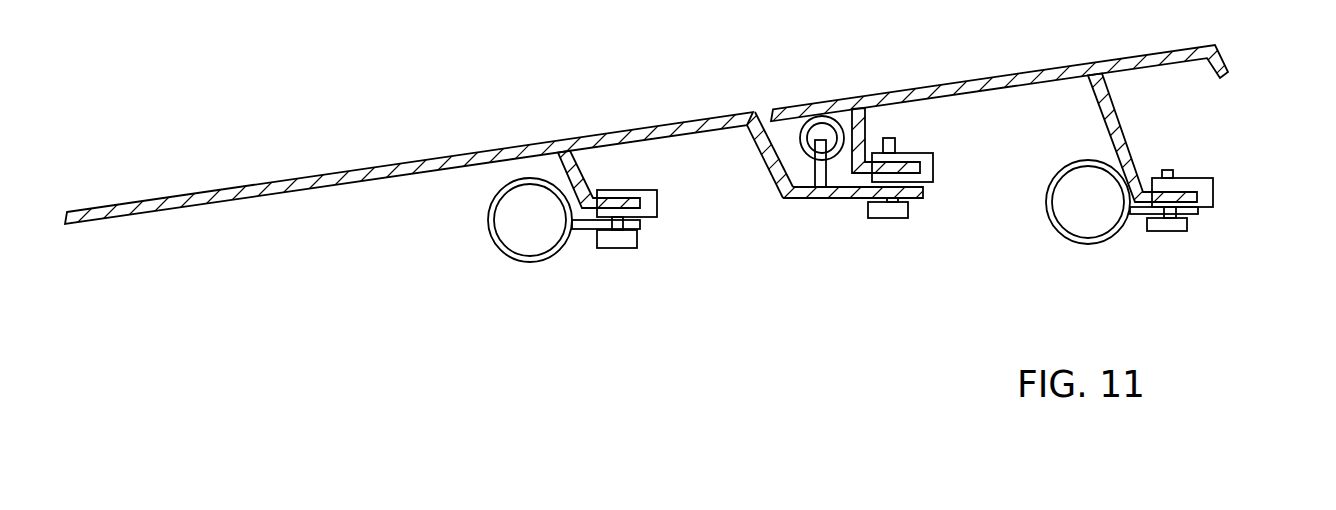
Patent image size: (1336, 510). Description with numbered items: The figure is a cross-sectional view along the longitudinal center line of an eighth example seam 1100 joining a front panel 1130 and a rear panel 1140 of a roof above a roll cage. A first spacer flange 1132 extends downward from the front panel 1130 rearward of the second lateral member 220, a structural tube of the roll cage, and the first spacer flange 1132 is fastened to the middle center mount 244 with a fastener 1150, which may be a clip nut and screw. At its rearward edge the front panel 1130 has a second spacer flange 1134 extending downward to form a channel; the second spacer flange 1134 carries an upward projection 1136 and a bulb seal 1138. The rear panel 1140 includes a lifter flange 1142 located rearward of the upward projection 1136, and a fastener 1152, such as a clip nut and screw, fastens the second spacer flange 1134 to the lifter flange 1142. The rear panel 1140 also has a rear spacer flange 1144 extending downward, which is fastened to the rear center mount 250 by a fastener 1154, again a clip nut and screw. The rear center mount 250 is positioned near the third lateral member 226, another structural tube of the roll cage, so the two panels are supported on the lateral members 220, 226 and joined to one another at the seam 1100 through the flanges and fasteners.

The seam 1100 is at (646, 133).
The front panel 1130 is at (409, 152).
The first spacer flange 1132 is at (491, 153).
The second spacer flange 1134 is at (720, 189).
The upward projection 1136 is at (821, 245).
The bulb seal 1138 is at (778, 113).
The rear panel 1140 is at (999, 108).
The lifter flange 1142 is at (901, 146).
The rear spacer flange 1144 is at (1169, 137).
The fastener 1150 is at (572, 278).
The fastener 1152 is at (923, 219).
The fastener 1154 is at (1215, 230).
The second lateral member 220 is at (456, 256).
The third lateral member 226 is at (1041, 207).
The middle center mount 244 is at (559, 271).
The rear center mount 250 is at (1113, 247).